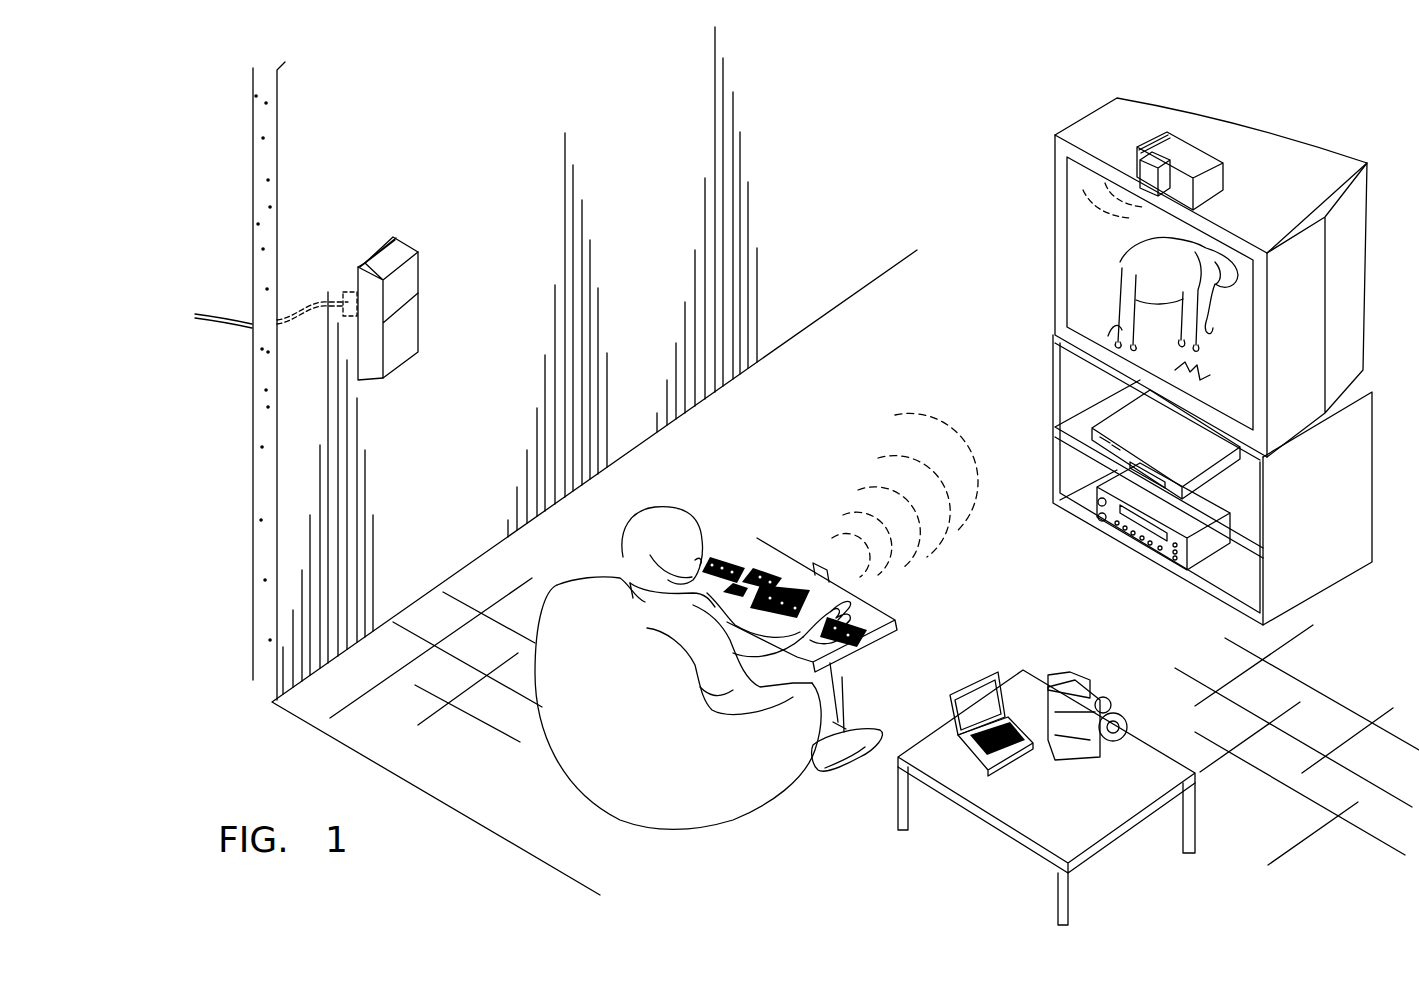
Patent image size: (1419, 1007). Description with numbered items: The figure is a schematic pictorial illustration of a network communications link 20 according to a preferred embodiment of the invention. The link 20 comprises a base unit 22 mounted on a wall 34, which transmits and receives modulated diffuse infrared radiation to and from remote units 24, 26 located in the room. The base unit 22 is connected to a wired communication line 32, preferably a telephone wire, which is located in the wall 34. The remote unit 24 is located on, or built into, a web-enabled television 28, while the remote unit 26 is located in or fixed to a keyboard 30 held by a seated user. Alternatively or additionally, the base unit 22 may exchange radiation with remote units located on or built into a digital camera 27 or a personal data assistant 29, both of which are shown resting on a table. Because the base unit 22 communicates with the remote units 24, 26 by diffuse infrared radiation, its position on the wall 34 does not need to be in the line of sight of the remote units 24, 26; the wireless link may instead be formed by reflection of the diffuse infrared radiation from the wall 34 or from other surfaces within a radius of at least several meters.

The network communications link 20 is at (216, 182).
The base unit 22 is at (400, 357).
The remote unit 24 is at (1153, 166).
The remote unit 26 is at (812, 570).
The digital camera 27 is at (1077, 692).
The web-enabled television 28 is at (1080, 233).
The personal data assistant 29 is at (975, 697).
The keyboard 30 is at (755, 555).
The wired communication line 32 is at (350, 290).
The wall 34 is at (281, 213).